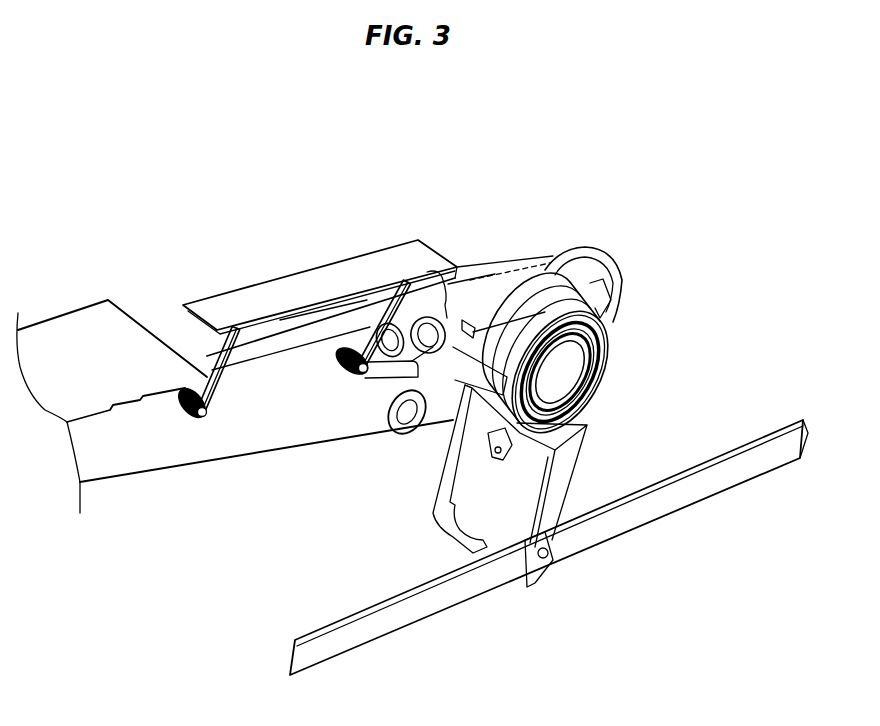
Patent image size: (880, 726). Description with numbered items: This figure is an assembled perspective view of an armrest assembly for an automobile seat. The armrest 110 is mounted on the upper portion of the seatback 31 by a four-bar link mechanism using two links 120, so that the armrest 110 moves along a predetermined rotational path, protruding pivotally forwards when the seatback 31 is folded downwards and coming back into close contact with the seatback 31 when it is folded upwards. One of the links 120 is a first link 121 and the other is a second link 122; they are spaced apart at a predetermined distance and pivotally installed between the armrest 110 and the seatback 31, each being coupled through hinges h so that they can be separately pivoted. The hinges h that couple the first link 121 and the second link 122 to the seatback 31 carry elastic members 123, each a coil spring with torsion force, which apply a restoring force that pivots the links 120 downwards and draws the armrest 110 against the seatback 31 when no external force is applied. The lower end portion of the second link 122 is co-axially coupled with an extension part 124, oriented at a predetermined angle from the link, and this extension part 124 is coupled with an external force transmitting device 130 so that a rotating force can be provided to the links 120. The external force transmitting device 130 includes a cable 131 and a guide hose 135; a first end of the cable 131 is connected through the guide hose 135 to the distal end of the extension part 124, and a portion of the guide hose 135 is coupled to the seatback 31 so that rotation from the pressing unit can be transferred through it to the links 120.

The seatback 31 is at (115, 458).
The armrest 110 is at (418, 240).
The links 120 is at (307, 302).
The first link 121 is at (212, 360).
The second link 122 is at (448, 297).
The elastic member 123 is at (345, 368).
The extension part 124 is at (380, 373).
The external force transmitting device 130 is at (637, 311).
The cable 131 is at (333, 300).
The guide hose 135 is at (603, 248).
The hinges h is at (378, 373).